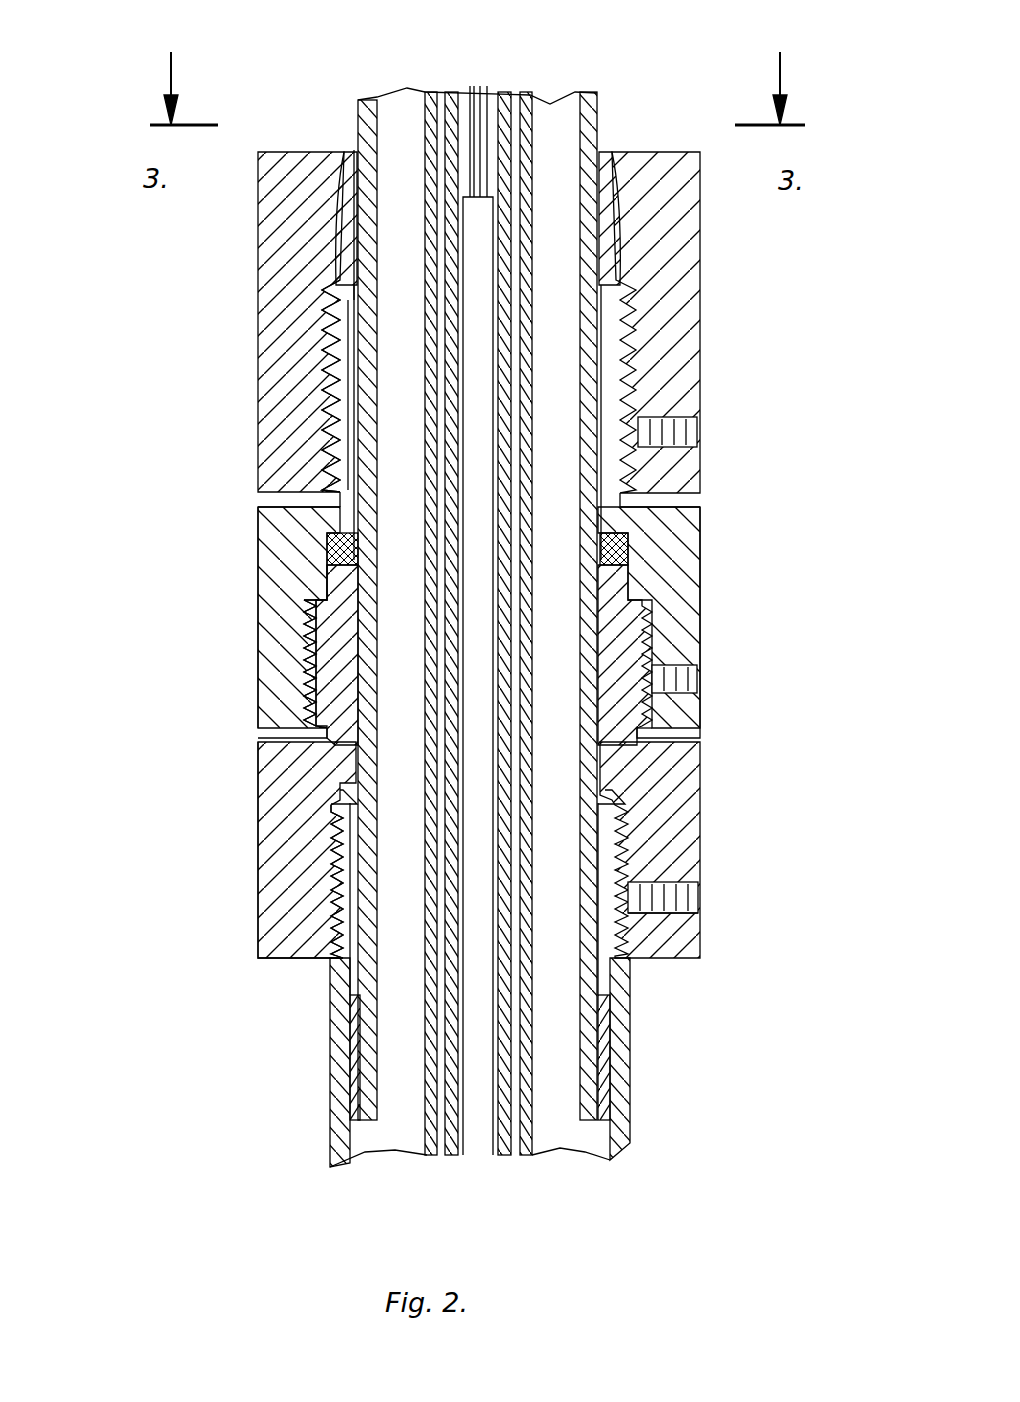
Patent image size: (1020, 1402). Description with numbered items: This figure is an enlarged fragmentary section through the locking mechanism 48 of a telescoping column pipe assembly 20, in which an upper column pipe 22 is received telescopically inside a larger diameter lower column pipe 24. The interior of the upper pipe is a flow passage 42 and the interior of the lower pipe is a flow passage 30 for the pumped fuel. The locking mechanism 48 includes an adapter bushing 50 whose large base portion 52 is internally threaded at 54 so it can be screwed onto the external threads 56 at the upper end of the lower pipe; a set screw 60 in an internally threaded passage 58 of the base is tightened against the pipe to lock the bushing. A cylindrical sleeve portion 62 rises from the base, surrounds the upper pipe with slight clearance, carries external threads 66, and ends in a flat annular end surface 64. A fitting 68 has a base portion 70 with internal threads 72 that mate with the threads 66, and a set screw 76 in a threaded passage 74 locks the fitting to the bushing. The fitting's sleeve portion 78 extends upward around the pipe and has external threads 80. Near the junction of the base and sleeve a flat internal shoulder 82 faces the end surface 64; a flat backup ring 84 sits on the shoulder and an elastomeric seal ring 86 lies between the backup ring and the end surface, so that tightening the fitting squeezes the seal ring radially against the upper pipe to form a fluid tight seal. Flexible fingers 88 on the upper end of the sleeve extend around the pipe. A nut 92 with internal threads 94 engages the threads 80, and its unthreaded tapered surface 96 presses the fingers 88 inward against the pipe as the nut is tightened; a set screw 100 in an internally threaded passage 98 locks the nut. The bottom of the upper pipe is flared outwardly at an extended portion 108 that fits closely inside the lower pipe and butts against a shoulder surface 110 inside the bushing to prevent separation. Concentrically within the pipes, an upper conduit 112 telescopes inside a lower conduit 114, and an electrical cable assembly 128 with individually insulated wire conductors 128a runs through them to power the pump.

The column pipe assembly 20 is at (288, 994).
The upper column pipe 22 is at (592, 110).
The lower column pipe 24 is at (625, 1128).
The flow passage 30 is at (572, 1140).
The flow passage 42 is at (405, 96).
The locking mechanism 48 is at (180, 299).
The adapter bushing 50 is at (268, 766).
The base portion 52 is at (275, 888).
The internal threads 54 is at (338, 930).
The external threads 56 is at (630, 842).
The internally threaded passage 58 is at (690, 905).
The set screw 60 is at (690, 890).
The sleeve portion 62 is at (318, 702).
The end surface 64 is at (352, 553).
The external threads 66 is at (305, 660).
The fitting 68 is at (270, 516).
The base portion 70 is at (268, 623).
The internal threads 72 is at (612, 640).
The threaded passage 74 is at (690, 690).
The set screw 76 is at (697, 671).
The sleeve portion 78 is at (345, 412).
The external threads 80 is at (330, 380).
The internal shoulder 82 is at (365, 540).
The backup ring 84 is at (627, 540).
The seal ring 86 is at (330, 556).
The fingers 88 is at (345, 182).
The nut 92 is at (272, 244).
The internal threads 94 is at (348, 343).
The tapered surface 96 is at (357, 268).
The internally threaded passage 98 is at (668, 420).
The set screw 100 is at (690, 440).
The extended portion 108 is at (605, 1040).
The shoulder surface 110 is at (625, 812).
The upper conduit 112 is at (440, 88).
The lower conduit 114 is at (540, 100).
The electrical cable assembly 128 is at (487, 280).
The electrical wire conductors 128a is at (479, 90).